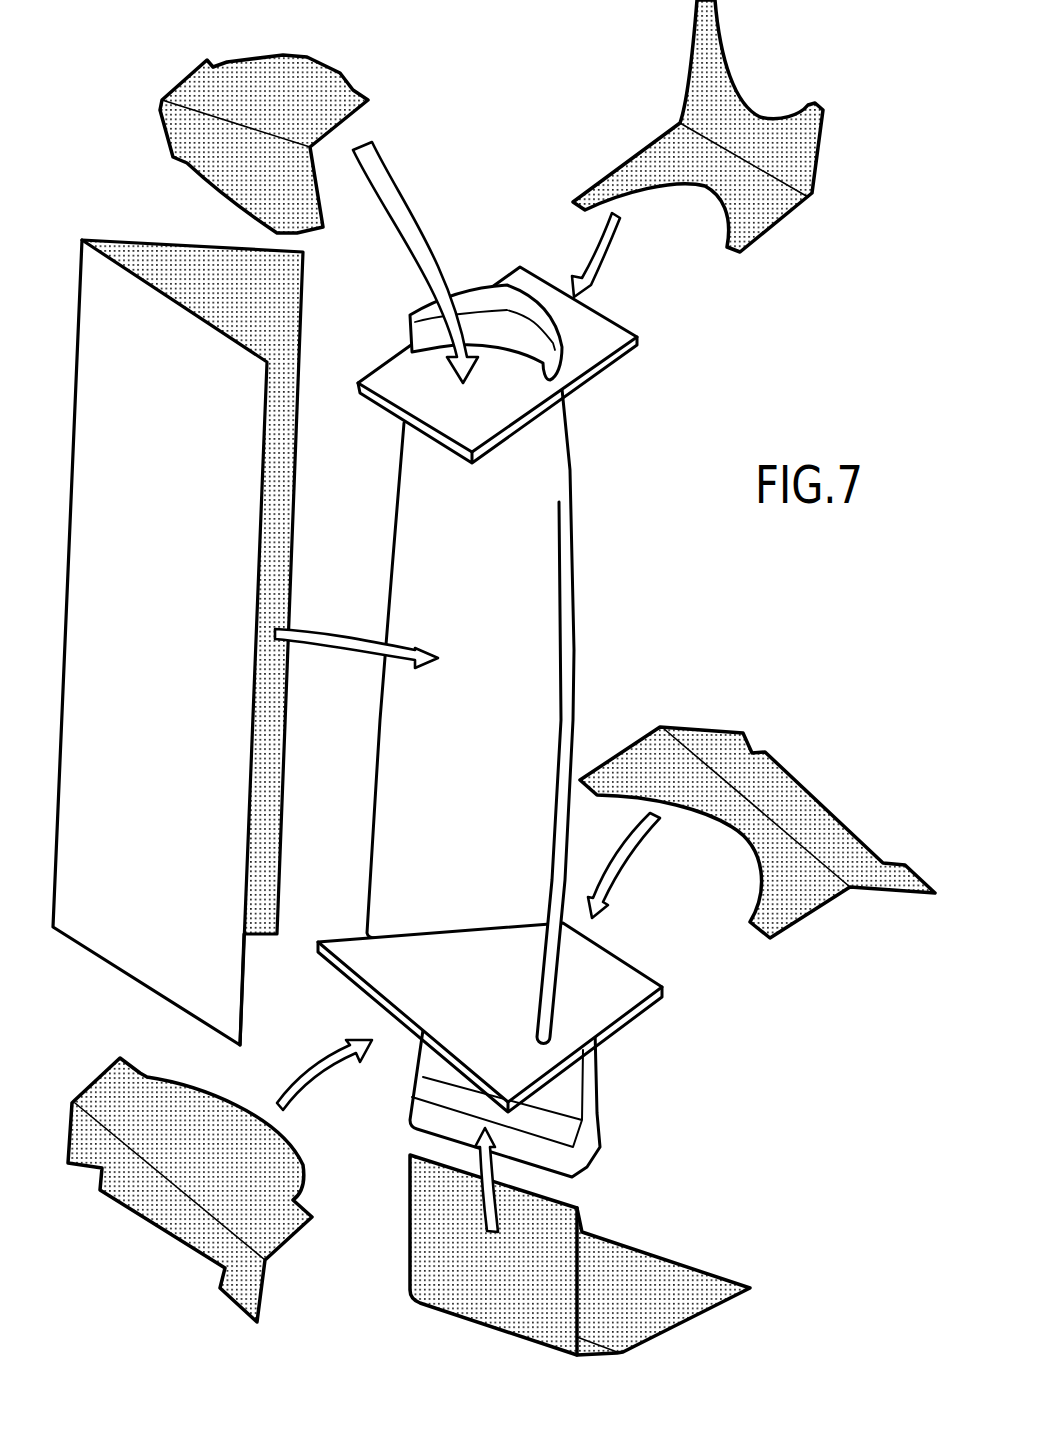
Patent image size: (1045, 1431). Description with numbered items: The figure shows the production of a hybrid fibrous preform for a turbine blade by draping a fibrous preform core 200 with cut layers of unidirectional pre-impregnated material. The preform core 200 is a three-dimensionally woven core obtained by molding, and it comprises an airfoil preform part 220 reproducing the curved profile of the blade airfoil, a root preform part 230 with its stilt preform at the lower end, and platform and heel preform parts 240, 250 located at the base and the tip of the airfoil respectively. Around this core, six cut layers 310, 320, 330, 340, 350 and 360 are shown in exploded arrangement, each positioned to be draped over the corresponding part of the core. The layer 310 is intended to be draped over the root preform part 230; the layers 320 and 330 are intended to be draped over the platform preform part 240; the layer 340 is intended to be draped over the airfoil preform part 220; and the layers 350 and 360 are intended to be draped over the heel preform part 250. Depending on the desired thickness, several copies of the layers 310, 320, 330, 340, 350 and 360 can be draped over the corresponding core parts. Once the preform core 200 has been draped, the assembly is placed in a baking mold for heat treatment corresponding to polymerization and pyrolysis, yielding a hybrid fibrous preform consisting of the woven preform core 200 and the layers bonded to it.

The fibrous preform core 200 is at (427, 778).
The airfoil preform part 220 is at (563, 622).
The root preform part 230 is at (430, 1057).
The platform preform part 240 is at (603, 1000).
The heel preform part 250 is at (530, 273).
The layer 310 is at (628, 1277).
The layer 320 is at (112, 1103).
The layer 330 is at (815, 822).
The layer 340 is at (130, 255).
The layer 350 is at (213, 85).
The layer 360 is at (729, 123).